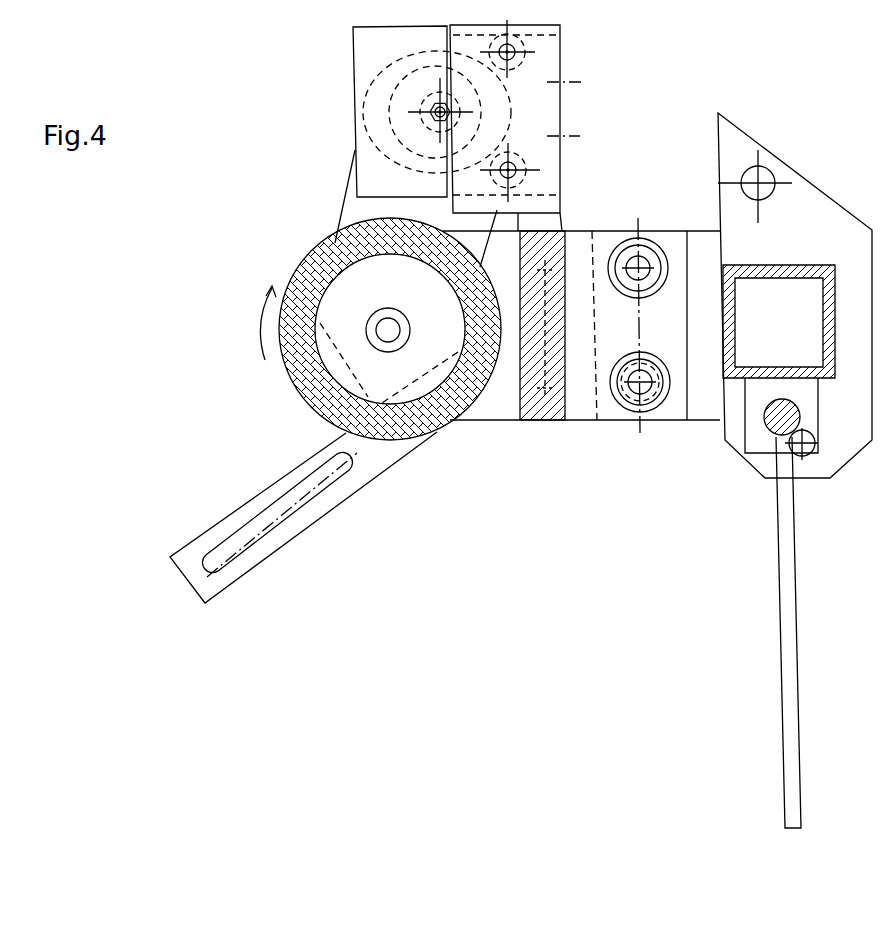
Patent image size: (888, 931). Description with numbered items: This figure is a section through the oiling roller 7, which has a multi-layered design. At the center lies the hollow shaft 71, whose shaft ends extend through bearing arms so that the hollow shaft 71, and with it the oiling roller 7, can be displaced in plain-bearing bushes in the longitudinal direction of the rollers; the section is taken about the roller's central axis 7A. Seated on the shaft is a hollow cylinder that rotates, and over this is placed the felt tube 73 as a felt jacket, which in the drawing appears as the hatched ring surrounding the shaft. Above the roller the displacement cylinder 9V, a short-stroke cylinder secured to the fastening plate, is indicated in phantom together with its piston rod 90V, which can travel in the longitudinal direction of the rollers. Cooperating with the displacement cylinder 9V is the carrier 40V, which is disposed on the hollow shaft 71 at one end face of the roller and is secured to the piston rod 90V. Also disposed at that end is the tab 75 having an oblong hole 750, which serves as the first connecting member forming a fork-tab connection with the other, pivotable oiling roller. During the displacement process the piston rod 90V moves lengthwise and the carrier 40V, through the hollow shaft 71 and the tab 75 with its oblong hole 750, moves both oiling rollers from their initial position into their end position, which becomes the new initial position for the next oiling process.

The oiling roller 7 is at (226, 290).
The displacement cylinder 9V is at (368, 53).
The piston rod 90V is at (427, 120).
The carrier 40V is at (353, 205).
The felt tube 73 is at (303, 397).
The hollow shaft 71 is at (388, 308).
The pivot axis 7A is at (389, 333).
The tab 75 is at (208, 537).
The oblong hole 750 is at (290, 516).